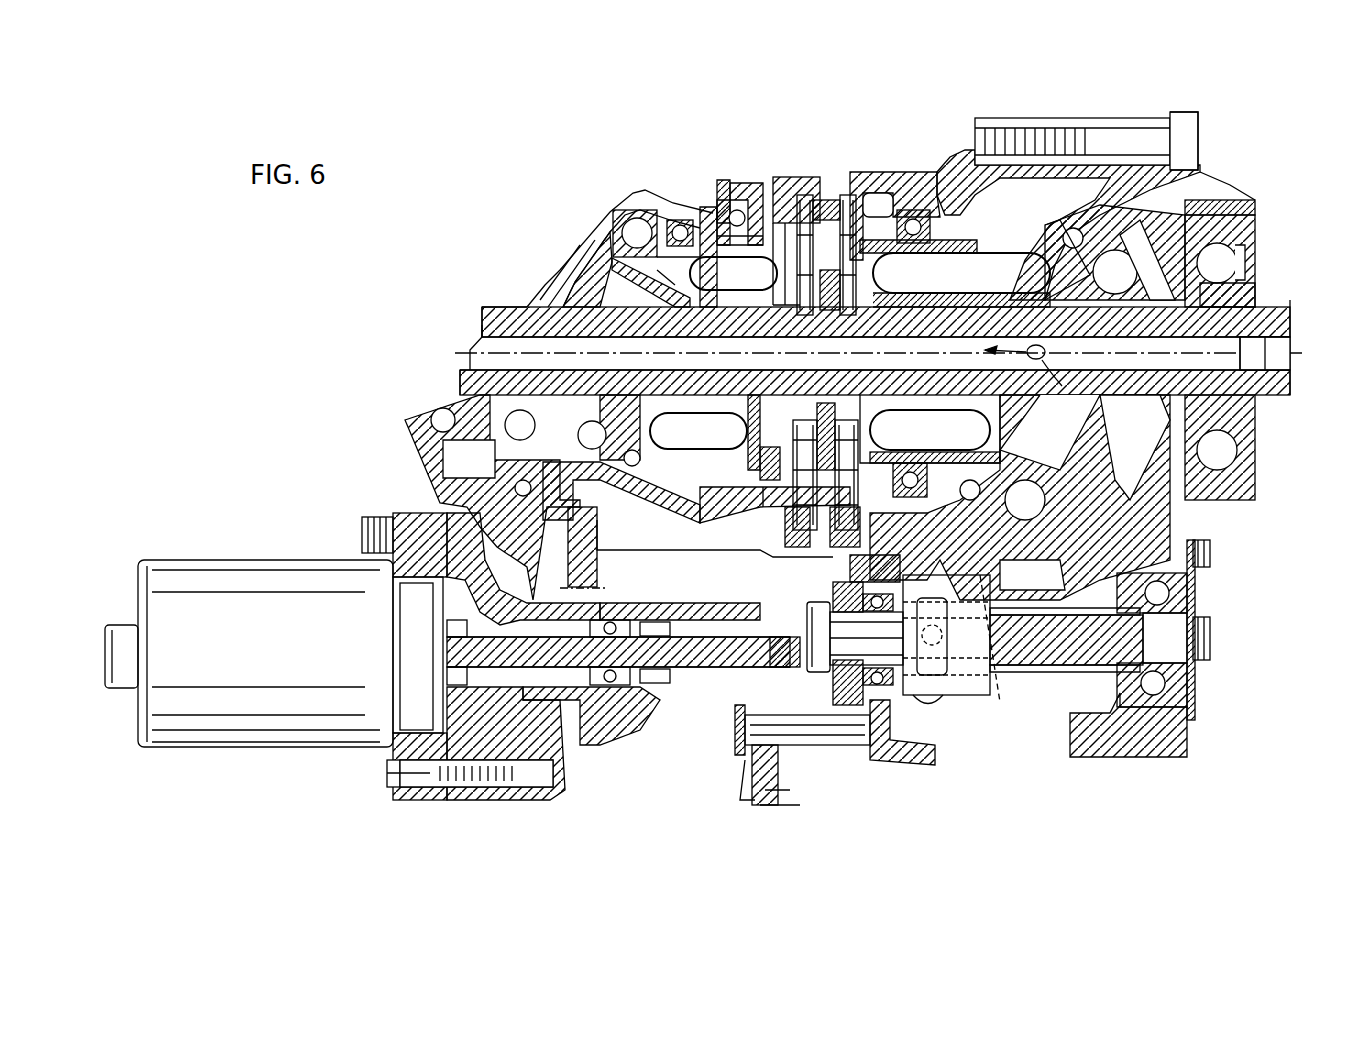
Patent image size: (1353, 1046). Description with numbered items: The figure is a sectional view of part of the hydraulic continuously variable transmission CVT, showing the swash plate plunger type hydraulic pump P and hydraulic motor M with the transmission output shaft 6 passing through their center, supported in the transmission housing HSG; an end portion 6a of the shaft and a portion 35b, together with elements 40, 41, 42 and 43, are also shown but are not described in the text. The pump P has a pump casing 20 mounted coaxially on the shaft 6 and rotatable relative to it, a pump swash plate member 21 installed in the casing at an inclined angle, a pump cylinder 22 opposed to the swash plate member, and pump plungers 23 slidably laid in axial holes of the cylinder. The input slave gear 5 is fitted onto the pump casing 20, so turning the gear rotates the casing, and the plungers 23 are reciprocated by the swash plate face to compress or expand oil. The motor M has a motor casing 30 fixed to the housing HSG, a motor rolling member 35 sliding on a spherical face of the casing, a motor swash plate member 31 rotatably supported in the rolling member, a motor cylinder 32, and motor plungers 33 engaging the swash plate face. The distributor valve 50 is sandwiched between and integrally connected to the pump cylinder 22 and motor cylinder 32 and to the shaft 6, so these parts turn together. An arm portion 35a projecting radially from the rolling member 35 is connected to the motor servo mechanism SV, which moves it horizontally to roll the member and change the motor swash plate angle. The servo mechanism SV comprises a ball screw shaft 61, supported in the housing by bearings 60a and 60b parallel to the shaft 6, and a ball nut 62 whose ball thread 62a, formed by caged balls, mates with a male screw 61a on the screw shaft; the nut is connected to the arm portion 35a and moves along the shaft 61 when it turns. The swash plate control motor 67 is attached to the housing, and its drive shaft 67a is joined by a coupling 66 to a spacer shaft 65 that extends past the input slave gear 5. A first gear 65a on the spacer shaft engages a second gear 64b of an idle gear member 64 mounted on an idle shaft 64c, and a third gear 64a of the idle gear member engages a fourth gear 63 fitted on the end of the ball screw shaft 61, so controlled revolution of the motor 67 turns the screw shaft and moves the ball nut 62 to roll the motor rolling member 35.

The transmission output shaft 6 is at (1262, 338).
The shaft end 6a is at (512, 338).
The shaft portion 35b is at (1265, 358).
The hydraulic pump P is at (664, 176).
The pump swash plate member 21 is at (660, 276).
The pump casing 20 is at (750, 183).
The pump cylinder 22 is at (770, 200).
The distributor valve 50 is at (830, 170).
The hydraulic motor M is at (917, 162).
The motor cylinder 32 is at (948, 254).
The motor plungers 33 is at (1015, 272).
The motor casing 30 is at (1022, 135).
The hydraulic continuously variable transmission CVT is at (1228, 152).
The motor rolling member 35 is at (1087, 218).
The bearing assembly 40 is at (1258, 280).
The outer race 42 is at (1255, 220).
The ball 43 is at (1228, 260).
The inner race 41 is at (1250, 302).
The motor swash plate member 31 is at (1000, 436).
The pump plungers 23 is at (676, 440).
The arm portion 35a is at (975, 565).
The input slave gear 5 is at (600, 571).
The motor servo mechanism SV is at (336, 484).
The swash plate control motor 67 is at (278, 663).
The drive shaft 67a is at (550, 720).
The transmission housing HSG is at (648, 700).
The spacer shaft 65 is at (712, 628).
The first gear 65a is at (770, 648).
The coupling 66 is at (562, 692).
The bearing 60b is at (870, 580).
The fourth gear 63 is at (835, 595).
The ball nut 62 is at (955, 705).
The ball thread 62a is at (1000, 705).
The ball screw shaft 61 is at (1060, 662).
The male screw 61a is at (1062, 616).
The bearing 60a is at (1178, 604).
The idle gear member 64 is at (803, 748).
The third gear 64a is at (855, 762).
The idle shaft 64c is at (748, 748).
The second gear 64b is at (790, 793).